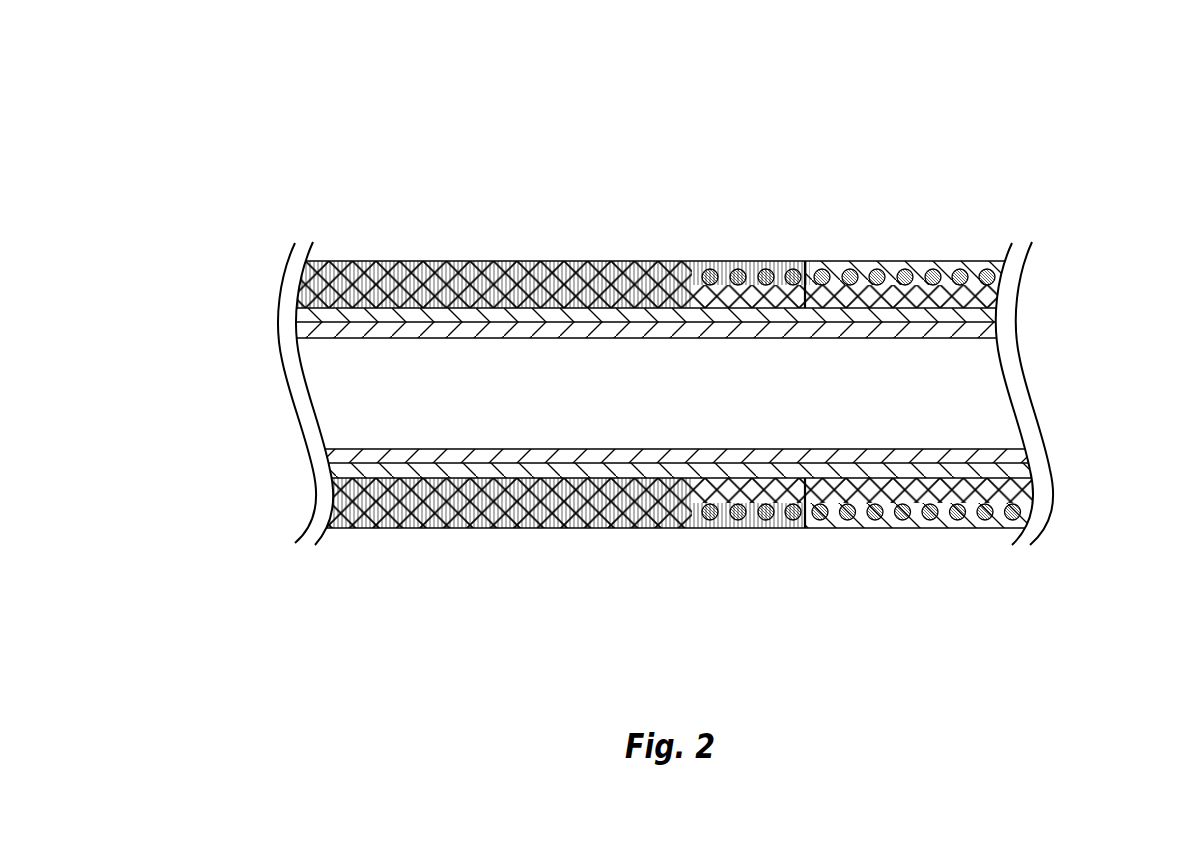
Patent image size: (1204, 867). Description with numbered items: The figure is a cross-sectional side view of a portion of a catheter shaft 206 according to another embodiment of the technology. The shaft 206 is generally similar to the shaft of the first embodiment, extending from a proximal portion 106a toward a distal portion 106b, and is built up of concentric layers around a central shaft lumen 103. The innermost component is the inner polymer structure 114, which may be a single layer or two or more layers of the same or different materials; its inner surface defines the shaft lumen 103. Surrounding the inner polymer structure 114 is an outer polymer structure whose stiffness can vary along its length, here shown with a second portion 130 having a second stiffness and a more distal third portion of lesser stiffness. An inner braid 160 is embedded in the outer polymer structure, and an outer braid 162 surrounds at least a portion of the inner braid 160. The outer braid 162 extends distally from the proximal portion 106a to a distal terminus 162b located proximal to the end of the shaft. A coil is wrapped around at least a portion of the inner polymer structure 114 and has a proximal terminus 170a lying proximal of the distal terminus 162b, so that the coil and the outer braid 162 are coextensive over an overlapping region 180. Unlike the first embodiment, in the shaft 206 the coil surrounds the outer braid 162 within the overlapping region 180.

The catheter shaft 206 is at (419, 128).
The overlapping region 180 is at (1012, 176).
The second portion 130 is at (805, 253).
The outer braid 162 is at (302, 275).
The distal terminus of the outer braid 162b is at (700, 298).
The inner braid 160 is at (302, 300).
The inner polymer structure 114 is at (1024, 309).
The shaft lumen 103 is at (497, 405).
The proximal portion 106a is at (280, 394).
The distal portion 106b is at (1057, 393).
The proximal terminus of the coil 170a is at (701, 528).